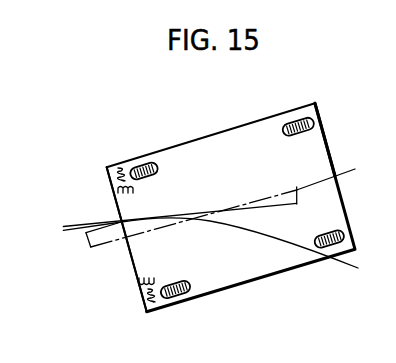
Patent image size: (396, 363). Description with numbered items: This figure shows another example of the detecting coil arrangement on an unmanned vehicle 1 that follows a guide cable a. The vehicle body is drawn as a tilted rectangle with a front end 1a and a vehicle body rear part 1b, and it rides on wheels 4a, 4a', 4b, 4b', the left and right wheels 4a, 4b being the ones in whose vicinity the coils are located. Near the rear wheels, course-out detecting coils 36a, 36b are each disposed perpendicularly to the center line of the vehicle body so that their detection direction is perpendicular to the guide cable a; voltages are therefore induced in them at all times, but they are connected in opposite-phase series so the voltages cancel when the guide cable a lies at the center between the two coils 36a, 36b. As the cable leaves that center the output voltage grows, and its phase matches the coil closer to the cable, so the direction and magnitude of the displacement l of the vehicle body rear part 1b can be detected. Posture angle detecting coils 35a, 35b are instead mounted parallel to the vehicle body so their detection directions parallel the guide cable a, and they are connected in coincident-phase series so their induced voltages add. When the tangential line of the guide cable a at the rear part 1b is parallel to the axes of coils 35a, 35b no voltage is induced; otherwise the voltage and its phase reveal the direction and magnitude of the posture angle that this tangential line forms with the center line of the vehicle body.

The unmanned vehicle 1 is at (217, 133).
The body front end 1a is at (322, 128).
The vehicle body rear part 1b is at (137, 265).
The wheel 4a is at (291, 108).
The front wheel 4a' is at (143, 153).
The wheel 4b is at (322, 265).
The rear wheel 4b' is at (190, 300).
The posture angle detecting coil 35a is at (134, 190).
The posture angle detecting coil 35b is at (142, 283).
The course-out detecting coil 36a is at (117, 167).
The course-out detecting coil 36b is at (150, 302).
The guide cable a is at (353, 267).
The displacement l is at (78, 241).